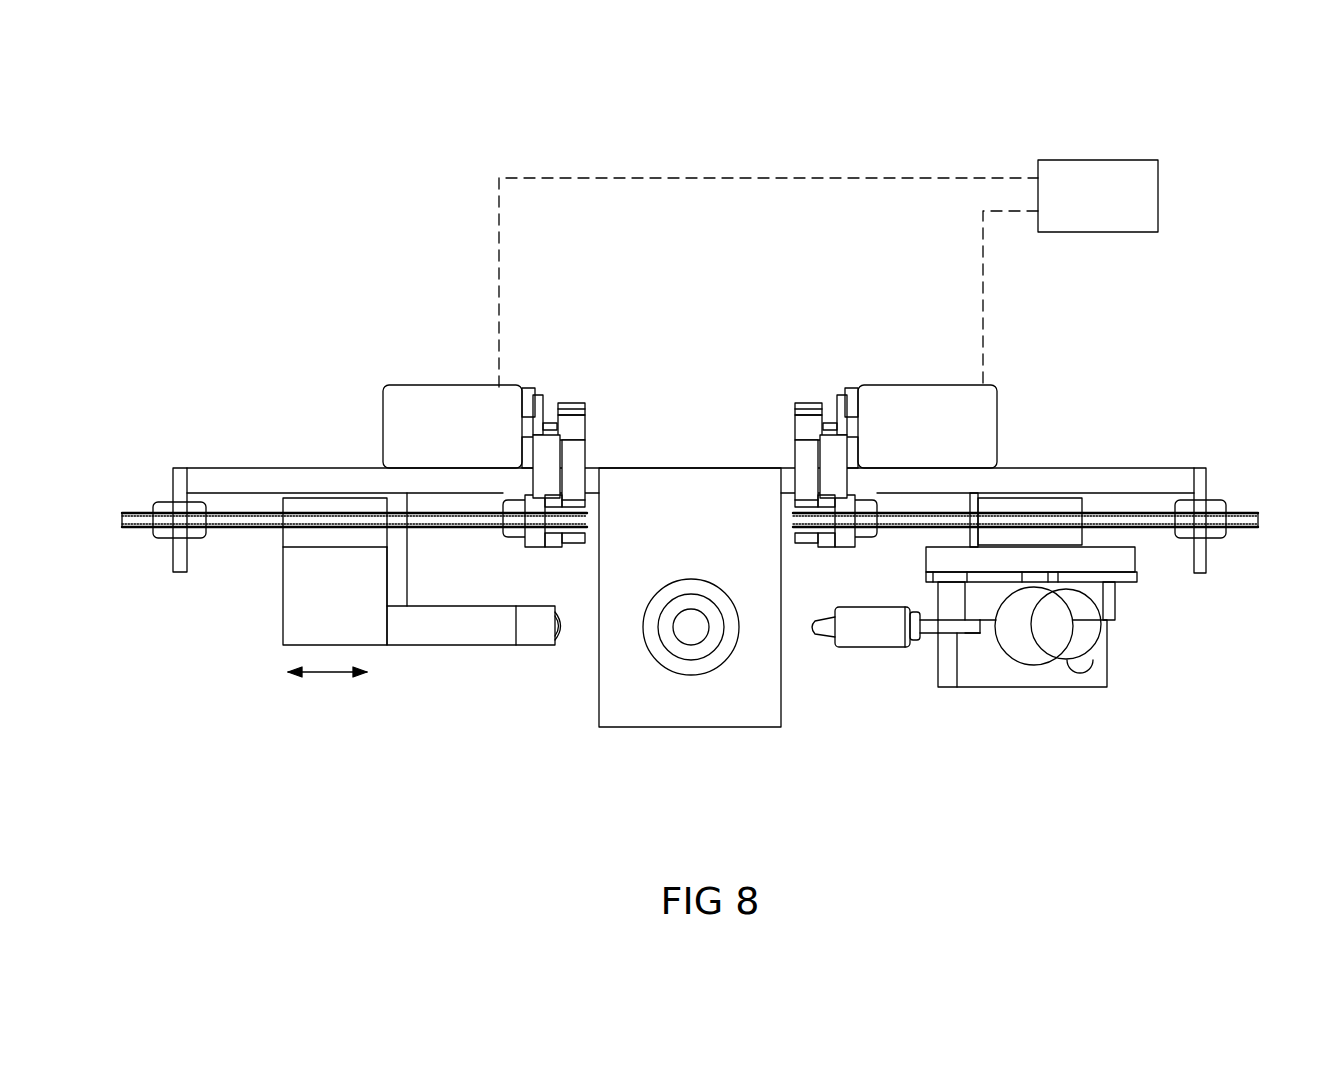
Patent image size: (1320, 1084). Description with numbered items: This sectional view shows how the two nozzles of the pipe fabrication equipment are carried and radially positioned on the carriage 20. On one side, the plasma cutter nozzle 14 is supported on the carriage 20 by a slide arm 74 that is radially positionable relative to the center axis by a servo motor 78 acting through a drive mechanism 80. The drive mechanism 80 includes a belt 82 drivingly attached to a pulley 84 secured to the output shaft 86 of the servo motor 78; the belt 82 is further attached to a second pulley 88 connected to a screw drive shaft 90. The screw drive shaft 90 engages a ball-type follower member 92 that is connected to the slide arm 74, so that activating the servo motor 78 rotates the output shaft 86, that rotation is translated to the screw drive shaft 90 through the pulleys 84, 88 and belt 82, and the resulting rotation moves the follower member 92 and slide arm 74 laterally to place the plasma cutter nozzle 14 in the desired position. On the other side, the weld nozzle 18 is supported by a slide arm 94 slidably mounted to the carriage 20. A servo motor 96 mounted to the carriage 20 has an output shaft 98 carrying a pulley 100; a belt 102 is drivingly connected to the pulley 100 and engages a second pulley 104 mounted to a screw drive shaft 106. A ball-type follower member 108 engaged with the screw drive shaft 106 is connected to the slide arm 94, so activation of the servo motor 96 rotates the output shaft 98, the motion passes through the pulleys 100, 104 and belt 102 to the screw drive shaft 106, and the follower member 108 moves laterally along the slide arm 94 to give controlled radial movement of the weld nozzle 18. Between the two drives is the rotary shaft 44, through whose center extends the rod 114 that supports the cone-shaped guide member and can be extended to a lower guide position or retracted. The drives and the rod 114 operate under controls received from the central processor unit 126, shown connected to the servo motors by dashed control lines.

The plasma cutter nozzle 14 is at (563, 628).
The weld nozzle 18 is at (827, 633).
The carriage 20 is at (1205, 470).
The rotary shaft 44 is at (662, 667).
The slide arm 74 is at (403, 641).
The servo motor 78 is at (430, 385).
The drive mechanism 80 is at (570, 557).
The belt 82 is at (582, 462).
The pulley 84 is at (586, 410).
The output shaft 86 is at (545, 410).
The second pulley 88 is at (587, 520).
The screw drive shaft 90 is at (122, 519).
The ball-type follower member 92 is at (318, 500).
The slide arm 94 is at (1130, 563).
The servo motor 96 is at (886, 385).
The output shaft 98 is at (838, 410).
The pulley 100 is at (820, 410).
The belt 102 is at (797, 460).
The second pulley 104 is at (797, 500).
The screw drive shaft 106 is at (1255, 520).
The ball-type follower member 108 is at (1060, 500).
The rod 114 is at (703, 642).
The central processor unit (CPU) 126 is at (1150, 163).